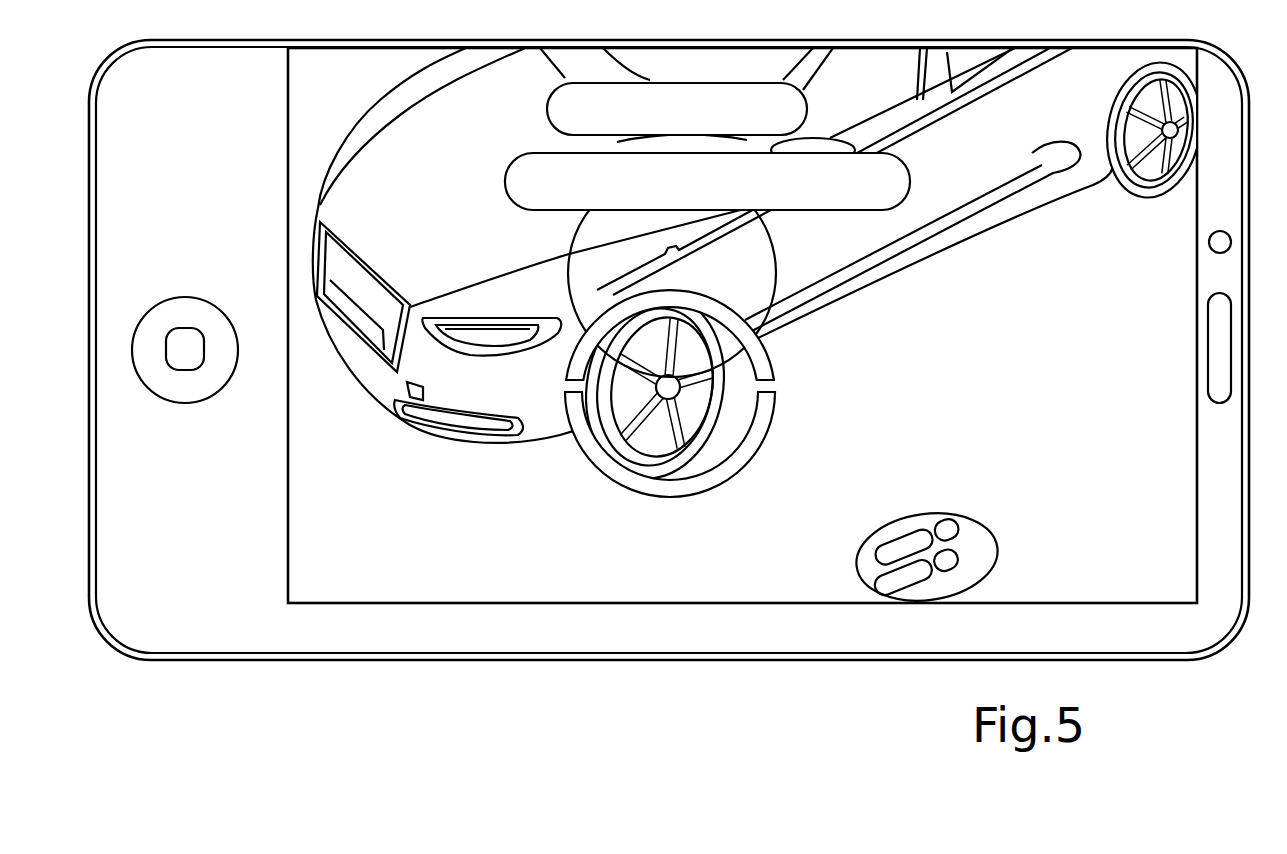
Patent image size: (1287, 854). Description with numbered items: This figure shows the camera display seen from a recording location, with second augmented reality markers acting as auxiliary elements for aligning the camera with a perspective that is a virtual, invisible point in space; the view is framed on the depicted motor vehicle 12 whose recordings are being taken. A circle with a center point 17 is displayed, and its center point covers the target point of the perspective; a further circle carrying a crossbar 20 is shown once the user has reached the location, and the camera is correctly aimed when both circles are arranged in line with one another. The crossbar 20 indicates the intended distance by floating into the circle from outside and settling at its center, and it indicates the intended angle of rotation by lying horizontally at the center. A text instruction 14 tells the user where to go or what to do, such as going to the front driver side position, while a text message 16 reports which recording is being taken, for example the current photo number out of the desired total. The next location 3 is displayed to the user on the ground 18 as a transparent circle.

The location 3 is at (957, 520).
The vehicle 12 is at (832, 277).
The text instruction 14 is at (505, 181).
The text message 16 is at (547, 108).
The circle with a center point 17 is at (683, 388).
The ground 18 is at (1006, 407).
The crossbar 20 is at (572, 252).